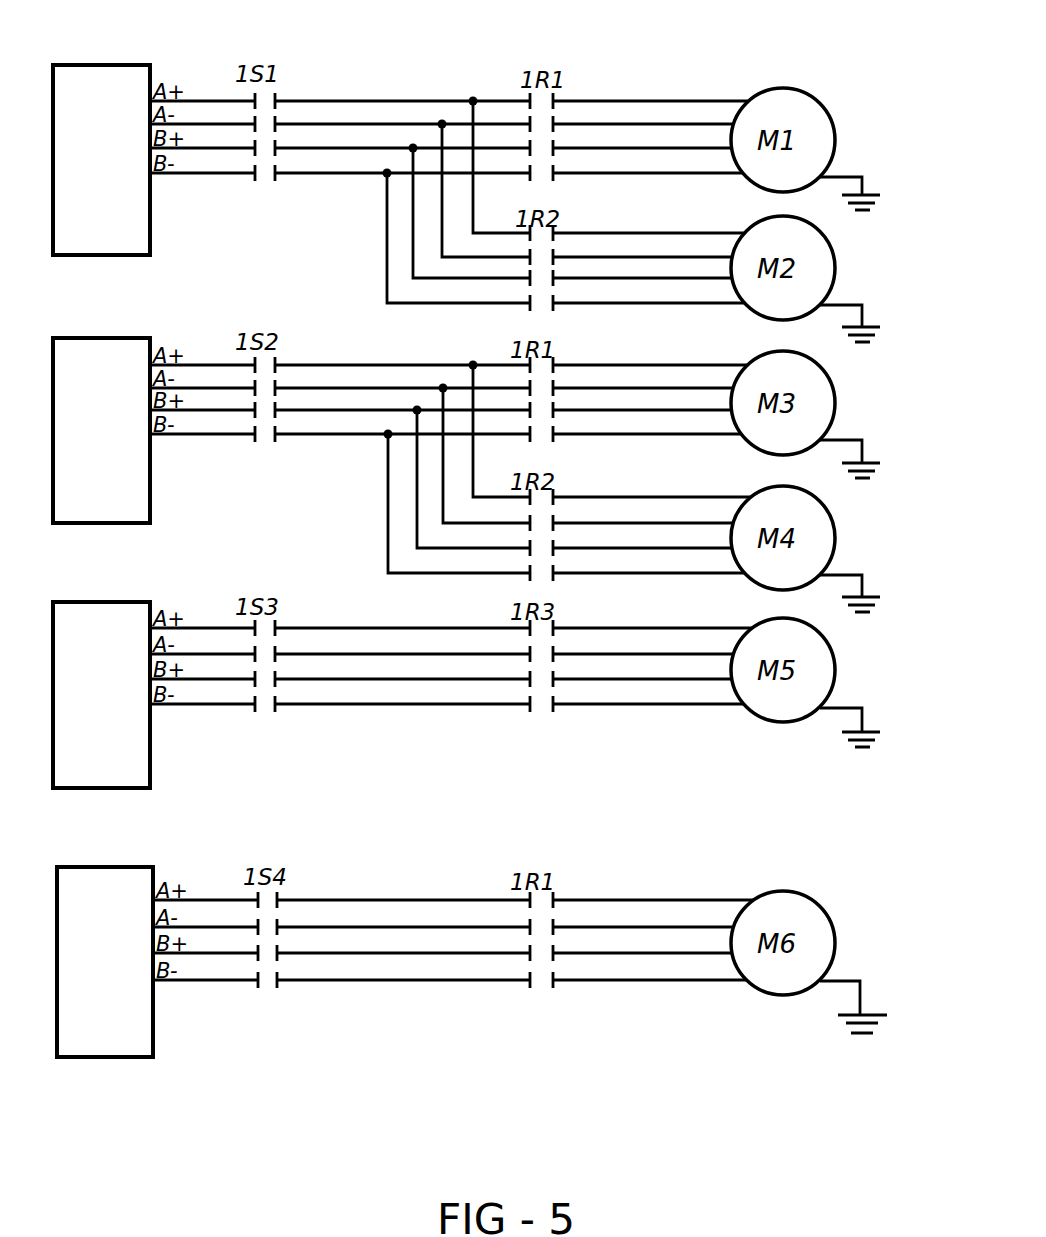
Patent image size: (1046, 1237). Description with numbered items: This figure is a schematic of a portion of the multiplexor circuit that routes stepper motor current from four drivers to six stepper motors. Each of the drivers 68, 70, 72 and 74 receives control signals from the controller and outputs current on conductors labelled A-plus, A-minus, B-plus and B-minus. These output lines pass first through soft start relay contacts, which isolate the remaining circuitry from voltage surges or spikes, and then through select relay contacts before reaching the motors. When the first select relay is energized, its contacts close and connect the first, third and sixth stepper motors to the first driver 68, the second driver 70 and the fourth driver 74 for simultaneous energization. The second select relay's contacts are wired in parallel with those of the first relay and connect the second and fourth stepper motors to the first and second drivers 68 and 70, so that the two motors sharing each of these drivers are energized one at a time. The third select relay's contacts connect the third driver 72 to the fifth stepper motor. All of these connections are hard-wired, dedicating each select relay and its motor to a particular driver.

The first driver 68 is at (108, 64).
The second driver 70 is at (118, 347).
The third driver 72 is at (123, 610).
The fourth driver 74 is at (128, 878).